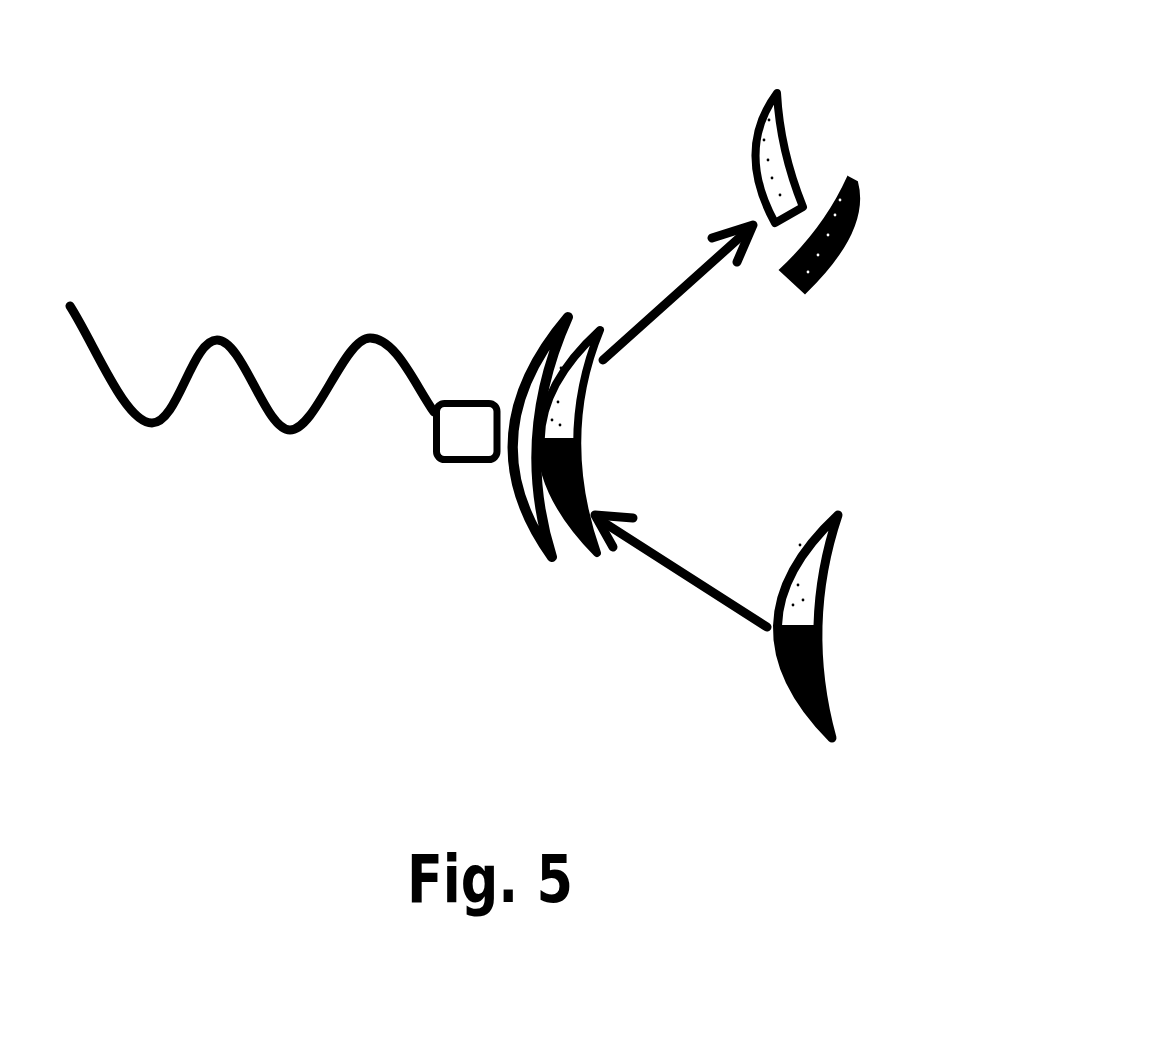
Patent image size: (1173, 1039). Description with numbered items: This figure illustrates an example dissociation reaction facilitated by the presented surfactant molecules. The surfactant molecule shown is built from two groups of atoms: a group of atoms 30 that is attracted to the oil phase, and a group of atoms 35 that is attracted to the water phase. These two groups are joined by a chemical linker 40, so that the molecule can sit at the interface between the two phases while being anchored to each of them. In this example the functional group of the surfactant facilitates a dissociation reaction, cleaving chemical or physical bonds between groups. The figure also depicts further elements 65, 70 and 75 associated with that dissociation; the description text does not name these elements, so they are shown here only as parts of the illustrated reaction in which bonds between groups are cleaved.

The group of atoms attracted to the oil phase 30 is at (263, 410).
The group of atoms attracted to the water phase 35 is at (540, 328).
The chemical linker 40 is at (450, 462).
The lens segment 65 is at (813, 522).
The upper lens portion 70 is at (781, 142).
The lower lens portion 75 is at (850, 180).